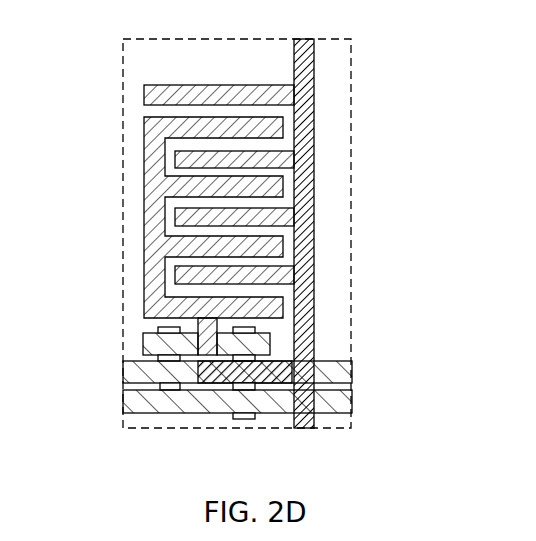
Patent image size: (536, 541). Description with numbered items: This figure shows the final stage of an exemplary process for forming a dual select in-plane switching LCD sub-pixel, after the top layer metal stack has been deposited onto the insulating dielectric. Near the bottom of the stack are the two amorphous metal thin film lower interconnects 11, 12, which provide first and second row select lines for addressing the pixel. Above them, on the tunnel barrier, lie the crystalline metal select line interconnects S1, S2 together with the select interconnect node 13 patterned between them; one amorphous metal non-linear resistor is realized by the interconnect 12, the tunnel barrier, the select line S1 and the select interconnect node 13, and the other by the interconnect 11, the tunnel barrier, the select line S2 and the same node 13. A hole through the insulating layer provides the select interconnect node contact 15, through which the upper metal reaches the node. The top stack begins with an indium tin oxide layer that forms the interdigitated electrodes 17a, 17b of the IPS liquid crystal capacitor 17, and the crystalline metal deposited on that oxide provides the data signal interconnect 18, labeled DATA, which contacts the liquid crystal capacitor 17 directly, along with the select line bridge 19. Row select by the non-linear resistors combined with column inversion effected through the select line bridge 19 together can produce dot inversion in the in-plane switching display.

The IPS liquid crystal capacitor 17 is at (237, 177).
The electrode of the IPS liquid crystal capacitor 17a is at (144, 92).
The electrode of the IPS liquid crystal capacitor 17b is at (147, 155).
The data signal interconnect 18 is at (316, 67).
The select interconnect node 13 is at (143, 340).
The select interconnect node contact 15 is at (196, 340).
The select line bridge 19 is at (226, 381).
The AMNR lower interconnect 12 is at (168, 387).
The AMNR lower interconnect 11 is at (242, 419).
The select line interconnect S1 is at (255, 372).
The select line interconnect S2 is at (255, 400).
The data line DATA is at (322, 450).